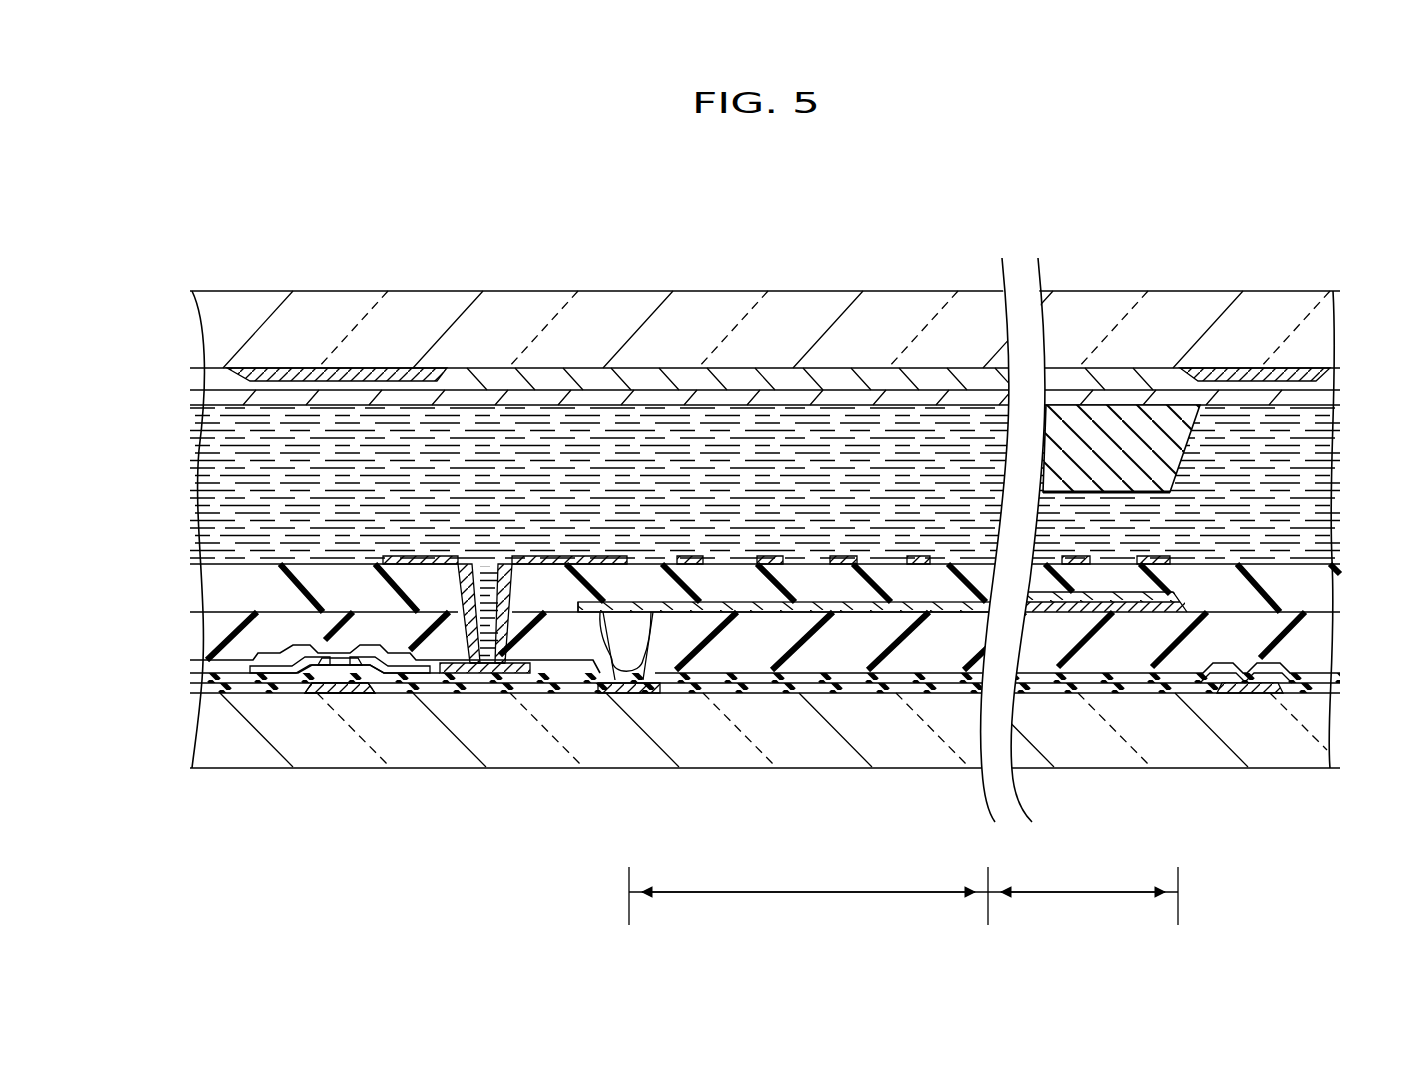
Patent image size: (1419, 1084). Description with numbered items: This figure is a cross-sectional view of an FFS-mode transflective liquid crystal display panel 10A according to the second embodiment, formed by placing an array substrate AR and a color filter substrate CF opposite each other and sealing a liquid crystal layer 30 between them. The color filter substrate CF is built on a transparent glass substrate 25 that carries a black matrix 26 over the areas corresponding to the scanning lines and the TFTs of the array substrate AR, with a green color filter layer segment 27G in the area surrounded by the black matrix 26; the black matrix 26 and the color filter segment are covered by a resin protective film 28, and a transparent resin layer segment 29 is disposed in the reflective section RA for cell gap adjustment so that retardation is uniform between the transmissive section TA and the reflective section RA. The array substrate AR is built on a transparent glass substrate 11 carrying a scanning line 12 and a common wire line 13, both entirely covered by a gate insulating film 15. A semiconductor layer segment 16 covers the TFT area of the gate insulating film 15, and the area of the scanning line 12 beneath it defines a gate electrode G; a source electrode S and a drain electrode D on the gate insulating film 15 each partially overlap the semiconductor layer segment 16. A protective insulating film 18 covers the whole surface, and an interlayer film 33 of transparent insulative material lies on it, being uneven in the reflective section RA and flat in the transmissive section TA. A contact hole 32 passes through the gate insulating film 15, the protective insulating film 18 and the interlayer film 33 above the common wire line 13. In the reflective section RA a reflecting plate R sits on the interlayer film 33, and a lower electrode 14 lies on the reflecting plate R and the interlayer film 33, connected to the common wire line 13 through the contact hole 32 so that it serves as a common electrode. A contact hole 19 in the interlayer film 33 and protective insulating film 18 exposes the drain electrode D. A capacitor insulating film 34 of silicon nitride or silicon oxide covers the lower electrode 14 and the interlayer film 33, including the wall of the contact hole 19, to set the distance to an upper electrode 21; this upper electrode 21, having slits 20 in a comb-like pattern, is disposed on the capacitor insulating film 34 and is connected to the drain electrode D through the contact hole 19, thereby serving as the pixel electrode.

The transflective liquid crystal display panel 10A is at (618, 204).
The color filter substrate CF is at (946, 246).
The array substrate AR is at (554, 810).
The transparent substrate 25 is at (205, 333).
The black matrix 26 is at (371, 368).
The color filter layer segment 27G is at (205, 378).
The protective film 28 is at (205, 398).
The transparent resin layer segment 29 is at (1098, 415).
The liquid crystal layer 30 is at (205, 455).
The capacitor insulating film 34 is at (210, 578).
The interlayer film 33 is at (210, 630).
The contact hole 32 is at (633, 660).
The upper electrode 21 is at (845, 560).
The slit 20 is at (727, 552).
The contact hole 19 is at (485, 558).
The lower electrode 14 is at (1117, 600).
The common wire line 13 is at (637, 700).
The gate insulating film 15 is at (875, 678).
The protective insulating film 18 is at (952, 690).
The semiconductor layer segment 16 is at (322, 690).
The source electrode S is at (292, 690).
The drain electrode D is at (398, 695).
The scanning line 12 is at (358, 695).
The gate electrode G is at (340, 688).
The reflecting plate R is at (1123, 675).
The transparent substrate 11 is at (200, 737).
The transmissive section TA is at (808, 891).
The reflective section RA is at (1083, 891).